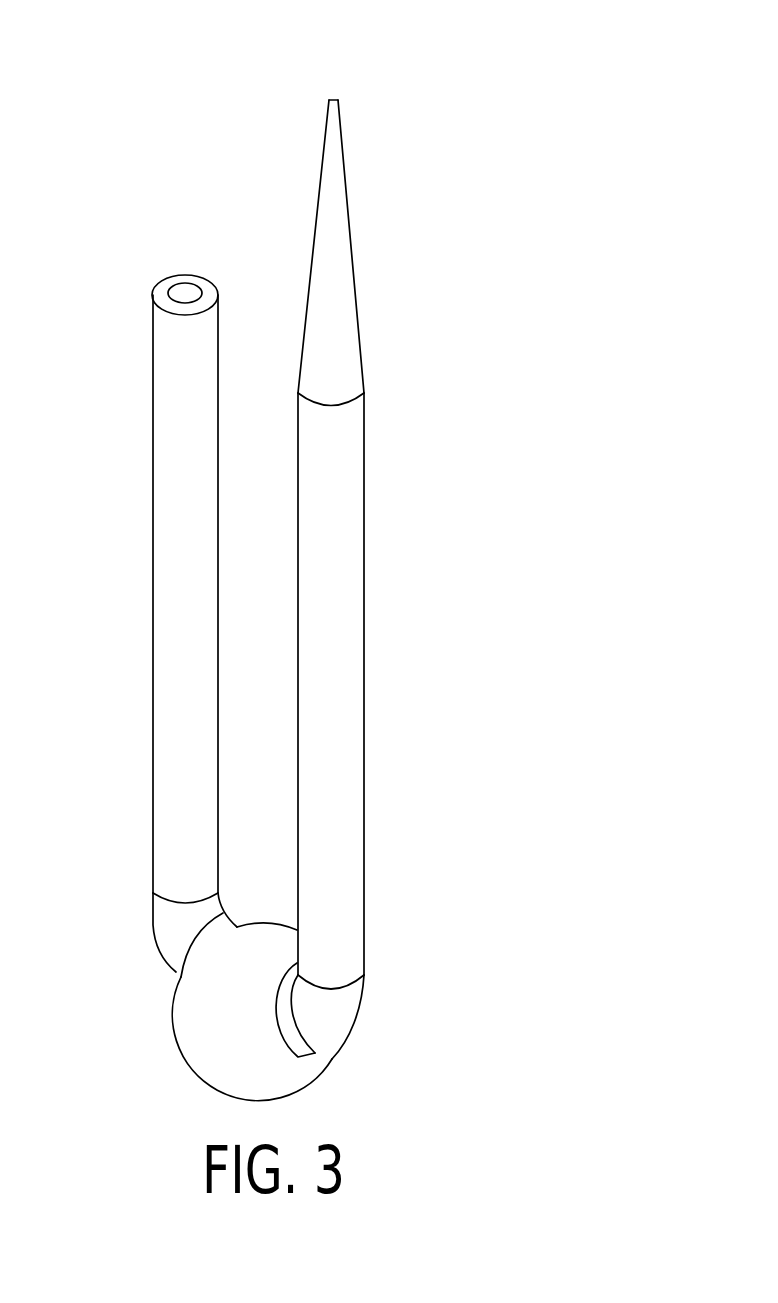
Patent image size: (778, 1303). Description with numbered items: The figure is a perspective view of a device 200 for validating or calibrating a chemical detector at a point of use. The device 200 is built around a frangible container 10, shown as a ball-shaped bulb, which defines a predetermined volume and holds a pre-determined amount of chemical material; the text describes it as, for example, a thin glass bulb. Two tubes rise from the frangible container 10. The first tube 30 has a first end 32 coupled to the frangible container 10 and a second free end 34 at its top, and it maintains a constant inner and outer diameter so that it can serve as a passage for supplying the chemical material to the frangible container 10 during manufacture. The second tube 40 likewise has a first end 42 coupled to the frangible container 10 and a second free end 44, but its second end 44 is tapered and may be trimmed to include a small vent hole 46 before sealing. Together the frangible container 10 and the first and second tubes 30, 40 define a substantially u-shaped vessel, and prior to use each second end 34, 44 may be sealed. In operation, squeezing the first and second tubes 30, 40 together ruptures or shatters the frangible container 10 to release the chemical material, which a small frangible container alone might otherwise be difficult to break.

The device 200 is at (176, 80).
The frangible container 10 is at (208, 1043).
The first tube 30 is at (170, 585).
The first end of first tube 32 is at (170, 922).
The second free end of first tube 34 is at (150, 299).
The second tube 40 is at (347, 722).
The first end of second tube 42 is at (330, 1017).
The second free end of second tube 44 is at (335, 348).
The vent hole 46 is at (333, 98).